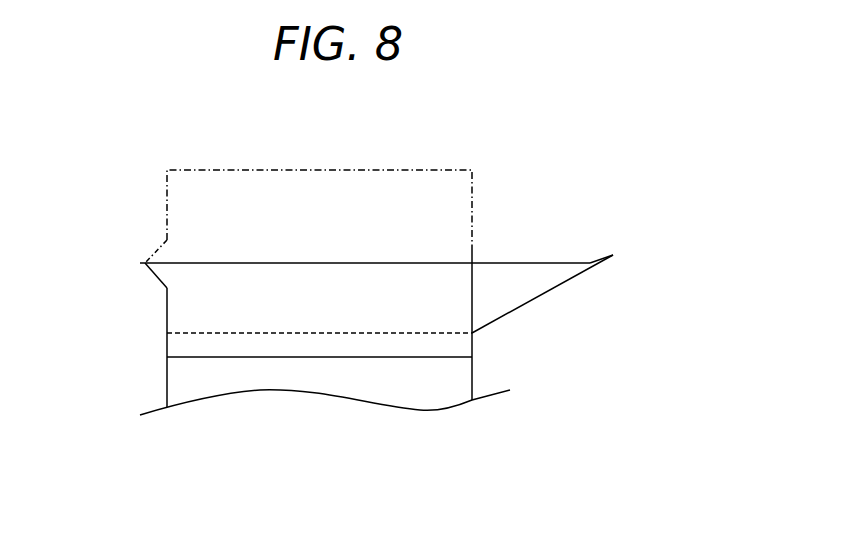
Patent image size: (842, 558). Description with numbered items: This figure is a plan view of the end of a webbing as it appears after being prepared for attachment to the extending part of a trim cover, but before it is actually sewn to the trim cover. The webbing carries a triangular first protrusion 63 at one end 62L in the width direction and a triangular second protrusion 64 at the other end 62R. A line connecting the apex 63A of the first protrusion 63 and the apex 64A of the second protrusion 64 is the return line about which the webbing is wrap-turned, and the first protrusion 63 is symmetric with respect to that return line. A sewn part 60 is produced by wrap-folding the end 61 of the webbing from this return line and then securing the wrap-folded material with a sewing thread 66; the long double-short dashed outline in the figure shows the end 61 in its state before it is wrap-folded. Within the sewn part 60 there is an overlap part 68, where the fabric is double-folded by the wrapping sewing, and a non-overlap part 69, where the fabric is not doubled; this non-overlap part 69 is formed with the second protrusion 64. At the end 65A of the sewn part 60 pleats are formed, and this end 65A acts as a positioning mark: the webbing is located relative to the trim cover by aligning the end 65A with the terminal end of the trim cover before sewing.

The sewn part 60 is at (455, 276).
The end of the webbing 61 is at (312, 170).
The end in the width direction 62L is at (167, 375).
The another end in the width direction 62R is at (472, 363).
The first protrusion 63 is at (152, 278).
The apex of the first protrusion 63A is at (140, 263).
The second protrusion 64 is at (550, 287).
The apex of the second protrusion 64A is at (613, 255).
The end of the sewn part 65A is at (213, 260).
The sewing thread 66 is at (233, 333).
The overlap part 68 is at (315, 318).
The non-overlap part 69 is at (503, 297).